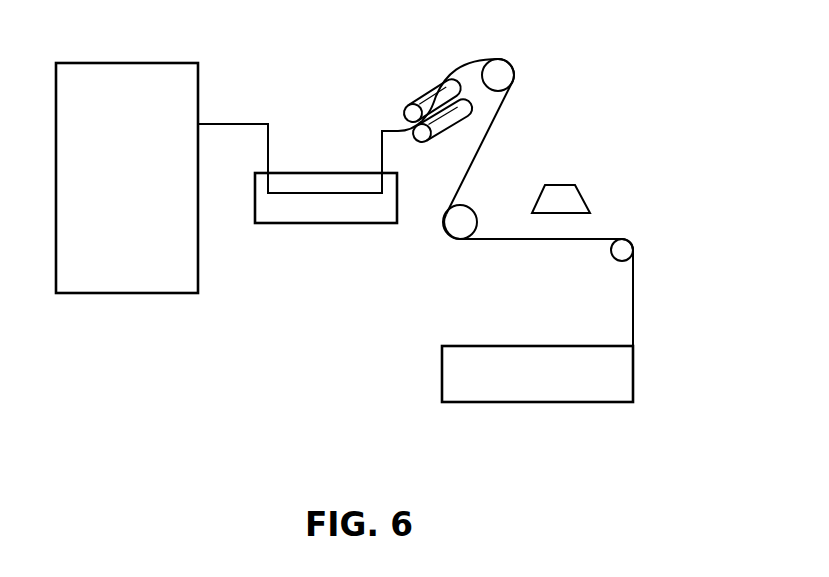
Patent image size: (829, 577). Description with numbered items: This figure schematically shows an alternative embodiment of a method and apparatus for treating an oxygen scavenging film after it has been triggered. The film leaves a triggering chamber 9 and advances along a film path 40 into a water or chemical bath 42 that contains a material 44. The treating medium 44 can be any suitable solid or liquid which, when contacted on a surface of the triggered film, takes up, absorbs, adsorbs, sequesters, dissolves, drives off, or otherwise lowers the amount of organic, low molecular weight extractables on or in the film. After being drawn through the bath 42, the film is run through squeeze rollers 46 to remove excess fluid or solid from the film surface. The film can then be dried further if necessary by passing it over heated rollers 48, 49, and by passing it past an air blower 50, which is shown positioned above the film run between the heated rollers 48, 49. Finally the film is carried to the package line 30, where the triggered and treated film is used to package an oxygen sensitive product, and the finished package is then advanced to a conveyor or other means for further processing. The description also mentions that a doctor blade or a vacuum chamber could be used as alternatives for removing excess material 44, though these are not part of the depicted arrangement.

The triggering chamber 9 is at (136, 190).
The package line 30 is at (515, 402).
The film path 40 is at (248, 124).
The water or chemical bath 42 is at (320, 223).
The material 44 is at (358, 208).
The squeeze rollers 46 is at (424, 80).
The heated roller 48 is at (498, 59).
The heated roller 49 is at (457, 240).
The air blower 50 is at (578, 192).